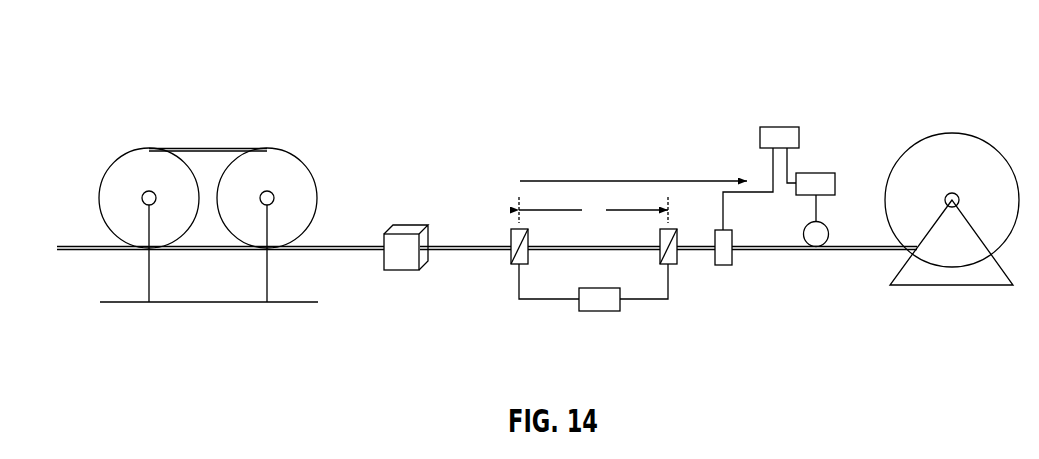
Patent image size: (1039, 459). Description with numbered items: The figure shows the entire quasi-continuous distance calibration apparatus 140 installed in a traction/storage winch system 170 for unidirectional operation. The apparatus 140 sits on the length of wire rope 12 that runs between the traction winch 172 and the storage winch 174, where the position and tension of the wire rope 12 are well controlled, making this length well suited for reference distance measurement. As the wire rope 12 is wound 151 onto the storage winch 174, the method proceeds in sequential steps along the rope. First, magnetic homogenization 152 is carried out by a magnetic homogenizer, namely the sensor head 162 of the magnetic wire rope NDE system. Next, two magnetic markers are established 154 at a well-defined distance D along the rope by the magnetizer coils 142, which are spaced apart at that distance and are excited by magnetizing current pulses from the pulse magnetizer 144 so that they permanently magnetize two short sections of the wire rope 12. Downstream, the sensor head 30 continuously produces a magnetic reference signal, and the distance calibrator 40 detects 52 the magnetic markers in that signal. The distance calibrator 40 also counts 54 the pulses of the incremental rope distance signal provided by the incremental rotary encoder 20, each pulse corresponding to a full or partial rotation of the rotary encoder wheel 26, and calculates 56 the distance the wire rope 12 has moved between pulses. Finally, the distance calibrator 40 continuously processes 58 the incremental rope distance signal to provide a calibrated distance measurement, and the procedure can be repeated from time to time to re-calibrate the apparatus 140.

The traction/storage winch system 170 is at (87, 83).
The traction winch 172 is at (100, 155).
The wire rope 12 is at (207, 148).
The magnetic homogenization 152 is at (392, 220).
The sensor head 162 is at (408, 232).
The quasi-continuous distance calibration apparatus 140 is at (707, 115).
The magnetizer coils 142 is at (512, 229).
The pulse magnetizer 144 is at (600, 287).
The establishing magnetic markers 154 is at (600, 318).
The winding 151 is at (633, 180).
The distance calibrator 40 is at (797, 127).
The counting pulses 54 is at (758, 118).
The calculating distance 56 is at (776, 118).
The processing incremental rope distance signal 58 is at (787, 118).
The incremental rotary encoder 20 is at (817, 173).
The rotary encoder wheel 26 is at (815, 249).
The sensor head 30 is at (728, 230).
The detecting magnetic markers 52 is at (737, 263).
The storage winch 174 is at (948, 132).